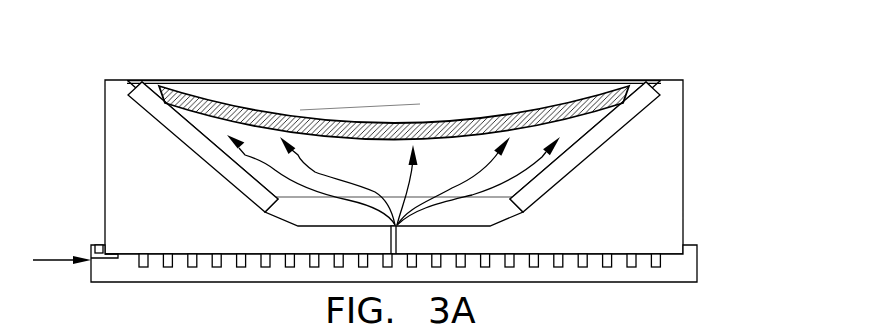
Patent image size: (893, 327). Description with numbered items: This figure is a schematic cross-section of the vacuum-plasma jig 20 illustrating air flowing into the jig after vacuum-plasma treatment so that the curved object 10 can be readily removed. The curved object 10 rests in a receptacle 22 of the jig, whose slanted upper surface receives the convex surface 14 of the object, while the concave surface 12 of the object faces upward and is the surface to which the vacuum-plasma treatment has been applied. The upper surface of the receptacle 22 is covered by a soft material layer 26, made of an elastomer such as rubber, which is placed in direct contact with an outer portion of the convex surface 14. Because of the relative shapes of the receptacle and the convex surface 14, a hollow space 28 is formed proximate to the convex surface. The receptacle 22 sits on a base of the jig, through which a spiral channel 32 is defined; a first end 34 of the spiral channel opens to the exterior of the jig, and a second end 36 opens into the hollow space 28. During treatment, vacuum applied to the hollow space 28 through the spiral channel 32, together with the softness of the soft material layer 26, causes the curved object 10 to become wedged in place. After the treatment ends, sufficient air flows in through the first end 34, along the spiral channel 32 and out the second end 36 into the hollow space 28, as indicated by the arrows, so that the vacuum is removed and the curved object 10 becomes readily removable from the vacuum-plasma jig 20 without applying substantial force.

The curved object 10 is at (394, 89).
The concave surface 12 is at (290, 103).
The convex surface 14 is at (244, 126).
The vacuum-plasma jig 20 is at (393, 144).
The receptacle 22 is at (643, 167).
The soft material layer 26 is at (597, 115).
The hollow space 28 is at (266, 156).
The spiral channel 32 is at (119, 260).
The first end 34 is at (92, 258).
The second end 36 is at (407, 232).